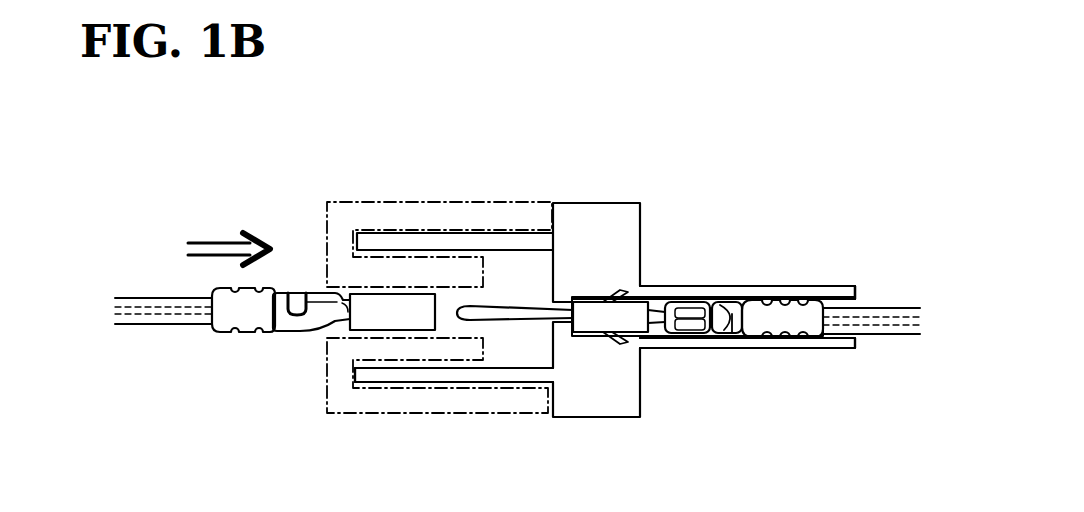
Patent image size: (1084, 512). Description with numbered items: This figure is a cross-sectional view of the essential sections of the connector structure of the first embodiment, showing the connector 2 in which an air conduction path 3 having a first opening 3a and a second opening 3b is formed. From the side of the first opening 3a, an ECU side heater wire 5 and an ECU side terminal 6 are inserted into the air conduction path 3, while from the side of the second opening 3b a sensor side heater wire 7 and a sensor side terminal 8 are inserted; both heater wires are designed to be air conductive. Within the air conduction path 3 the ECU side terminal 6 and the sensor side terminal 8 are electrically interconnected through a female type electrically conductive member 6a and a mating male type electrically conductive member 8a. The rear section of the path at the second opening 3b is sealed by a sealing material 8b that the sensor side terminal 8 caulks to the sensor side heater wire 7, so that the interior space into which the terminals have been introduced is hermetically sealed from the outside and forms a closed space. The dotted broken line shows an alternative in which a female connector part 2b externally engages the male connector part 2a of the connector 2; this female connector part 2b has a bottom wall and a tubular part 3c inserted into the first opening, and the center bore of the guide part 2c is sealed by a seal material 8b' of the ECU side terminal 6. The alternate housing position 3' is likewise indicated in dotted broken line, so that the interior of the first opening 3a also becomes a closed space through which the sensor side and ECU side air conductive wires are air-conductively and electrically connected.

The connector 2 is at (575, 195).
The male connector part 2a is at (420, 242).
The female connector part 2b is at (367, 203).
The guide part 2c is at (433, 351).
The air conduction path 3 is at (713, 287).
The terminal housing (alternate position, phantom) 3' is at (437, 402).
The first opening 3a is at (372, 253).
The second opening 3b is at (848, 302).
The tubular part 3c is at (793, 292).
The ECU side heater wire 5 is at (155, 325).
The ECU side terminal 6 is at (278, 333).
The electrically conductive member (female type) 6a is at (350, 298).
The sensor side heater wire 7 is at (862, 336).
The sensor side terminal 8 is at (723, 302).
The mating electrically conductive member (male type) 8a is at (510, 305).
The sealing material 8b is at (780, 351).
The seal material 8b' is at (221, 343).